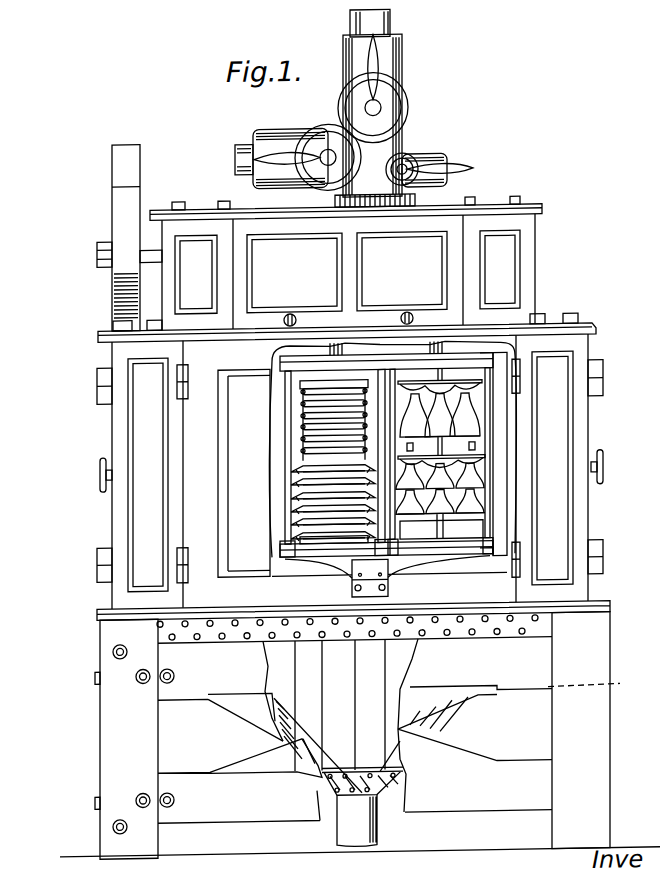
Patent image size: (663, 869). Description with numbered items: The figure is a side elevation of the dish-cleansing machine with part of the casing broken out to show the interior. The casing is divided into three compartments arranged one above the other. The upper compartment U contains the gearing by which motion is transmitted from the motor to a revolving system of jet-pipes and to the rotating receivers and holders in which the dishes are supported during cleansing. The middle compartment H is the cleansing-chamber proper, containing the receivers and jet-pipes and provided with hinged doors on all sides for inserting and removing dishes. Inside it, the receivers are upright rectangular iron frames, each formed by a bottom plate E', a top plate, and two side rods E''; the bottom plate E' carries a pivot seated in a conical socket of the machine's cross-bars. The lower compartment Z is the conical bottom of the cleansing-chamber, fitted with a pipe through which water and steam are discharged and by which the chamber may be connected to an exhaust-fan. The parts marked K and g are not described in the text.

The upper compartment U is at (355, 262).
The middle compartment H is at (349, 477).
The bottom plate of receiver E' is at (386, 449).
The side rods of receiver E'' is at (389, 459).
The central block K is at (361, 580).
The lower compartment Z is at (360, 735).
The cabinet plate g is at (347, 465).